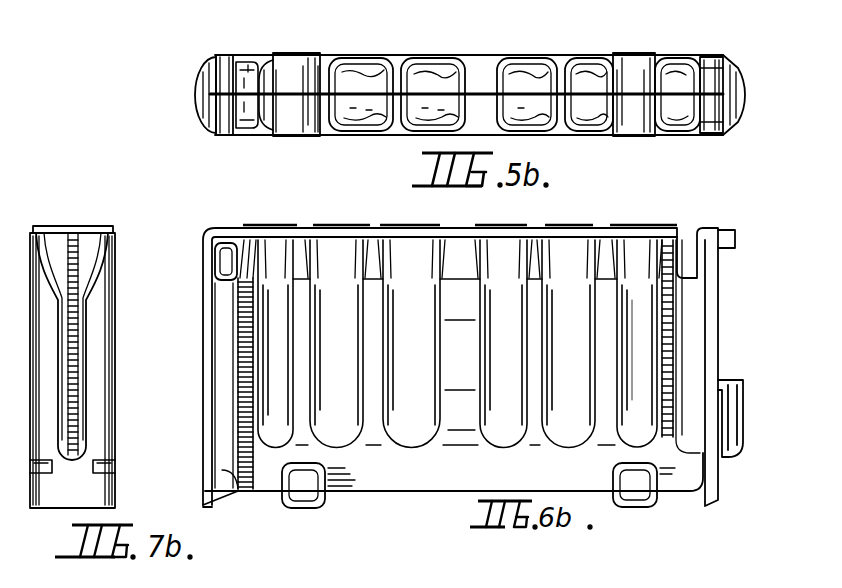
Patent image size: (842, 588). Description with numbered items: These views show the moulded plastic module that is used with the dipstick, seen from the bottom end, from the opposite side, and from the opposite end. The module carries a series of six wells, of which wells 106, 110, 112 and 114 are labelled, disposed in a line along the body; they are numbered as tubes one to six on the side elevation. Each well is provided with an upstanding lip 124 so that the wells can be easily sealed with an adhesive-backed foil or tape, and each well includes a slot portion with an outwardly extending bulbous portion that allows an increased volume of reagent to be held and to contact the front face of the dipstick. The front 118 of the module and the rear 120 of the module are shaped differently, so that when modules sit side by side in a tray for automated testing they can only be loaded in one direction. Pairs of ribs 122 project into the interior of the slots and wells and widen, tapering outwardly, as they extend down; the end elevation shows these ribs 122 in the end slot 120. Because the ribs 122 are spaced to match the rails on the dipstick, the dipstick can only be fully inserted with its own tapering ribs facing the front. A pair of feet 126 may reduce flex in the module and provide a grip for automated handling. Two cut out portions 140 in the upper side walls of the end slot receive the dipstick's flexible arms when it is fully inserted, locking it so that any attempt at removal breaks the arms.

In FIG. 5B, the well 106 is at (589, 78).
In FIG. 6B, the well 106 is at (347, 247).
In FIG. 5B, the well 110 is at (425, 75).
In FIG. 5B, the well 112 is at (362, 80).
In FIG. 6B, the well 114 is at (628, 245).
In FIG. 5B, the front of the module 118 is at (205, 65).
In FIG. 6B, the front of the module 118 is at (719, 322).
In FIG. 5B, the rear of the module 120 is at (716, 58).
In FIG. 6B, the rear of the module 120 is at (205, 318).
In FIG. 7B, the rear of the module 120 is at (97, 361).
In FIG. 7B, the ribs 122 is at (96, 226).
In FIG. 6B, the upstanding lip 124 is at (312, 225).
In FIG. 5B, the feet 126 is at (296, 80).
In FIG. 6B, the feet 126 is at (312, 509).
In FIG. 6B, the cut out portions 140 is at (215, 272).